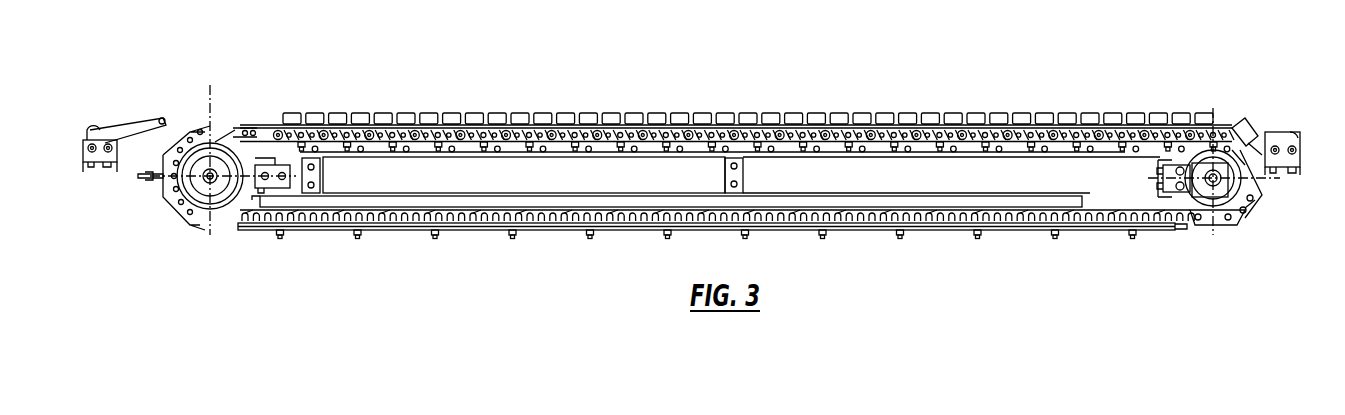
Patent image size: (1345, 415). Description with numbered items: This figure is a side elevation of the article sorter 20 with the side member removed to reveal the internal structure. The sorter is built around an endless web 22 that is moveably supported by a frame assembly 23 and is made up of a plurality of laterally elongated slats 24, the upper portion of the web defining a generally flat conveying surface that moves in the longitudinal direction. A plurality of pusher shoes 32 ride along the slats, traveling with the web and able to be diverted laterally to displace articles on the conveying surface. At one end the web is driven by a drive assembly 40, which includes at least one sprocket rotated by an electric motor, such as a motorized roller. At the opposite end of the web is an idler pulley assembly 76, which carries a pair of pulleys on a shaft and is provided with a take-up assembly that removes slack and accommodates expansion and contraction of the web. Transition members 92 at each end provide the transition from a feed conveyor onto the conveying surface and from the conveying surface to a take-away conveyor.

The article sorter 20 is at (942, 120).
The endless web 22 is at (563, 115).
The frame assembly 23 is at (1085, 203).
The slats 24 is at (256, 128).
The pusher shoes 32 is at (395, 114).
The drive assembly 40 is at (1236, 218).
The idler pulley assembly 76 is at (186, 132).
The transition members 92 is at (125, 128).